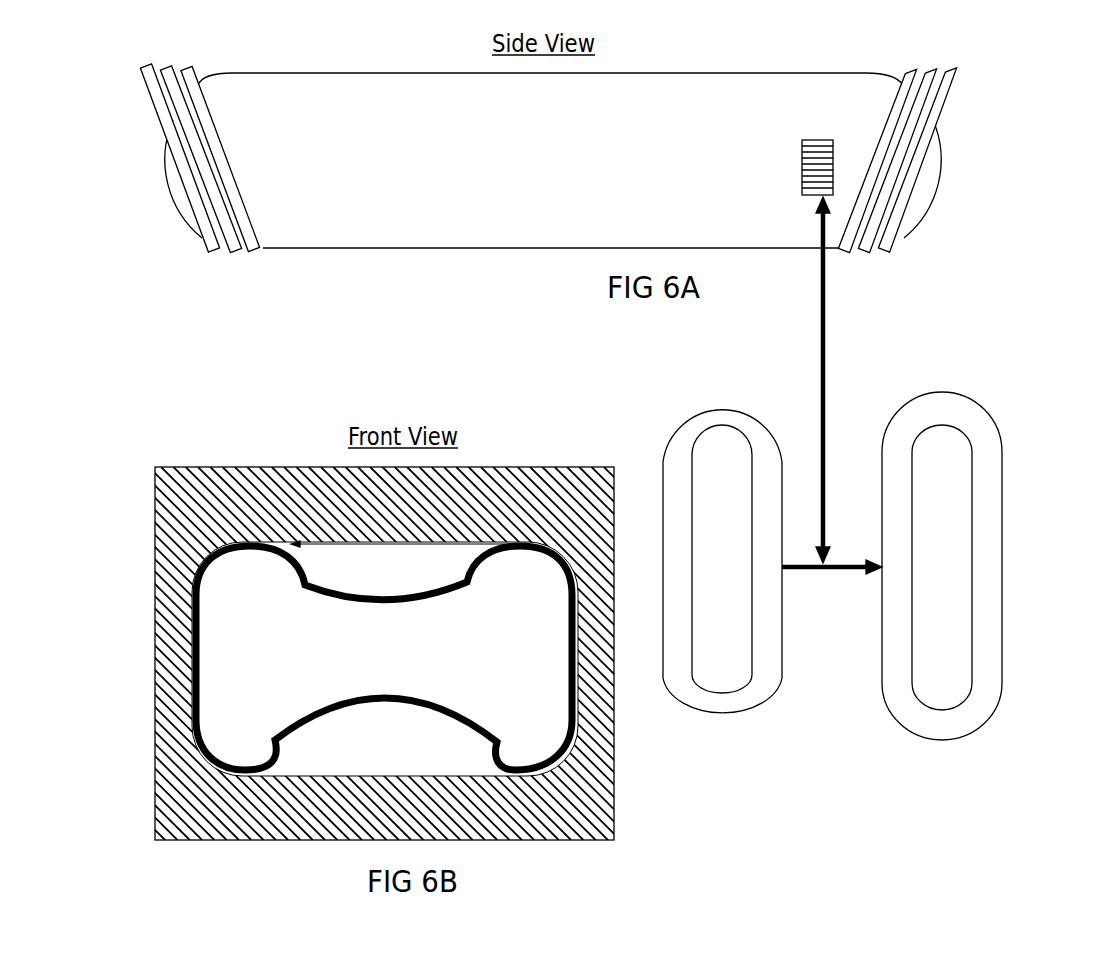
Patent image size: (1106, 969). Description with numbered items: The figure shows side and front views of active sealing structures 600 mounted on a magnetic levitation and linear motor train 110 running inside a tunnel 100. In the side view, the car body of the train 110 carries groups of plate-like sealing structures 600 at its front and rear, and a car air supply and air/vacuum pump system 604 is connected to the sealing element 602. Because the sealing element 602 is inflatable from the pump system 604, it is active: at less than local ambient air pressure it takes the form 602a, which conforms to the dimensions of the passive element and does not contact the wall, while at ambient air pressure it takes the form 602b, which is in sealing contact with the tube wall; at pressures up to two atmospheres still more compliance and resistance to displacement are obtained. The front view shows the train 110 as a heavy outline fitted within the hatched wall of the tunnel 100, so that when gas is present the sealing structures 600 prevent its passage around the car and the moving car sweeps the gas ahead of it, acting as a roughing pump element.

In FIG. 6B, the tunnel 100 is at (148, 796).
In FIG. 6A, the magnetic levitation and linear motor train 110 is at (608, 264).
In FIG. 6B, the magnetic levitation and linear motor train 110 is at (552, 622).
In FIG. 6A, the active sealing structures 600 is at (265, 257).
In FIG. 6B, the active sealing structures 600 is at (263, 503).
In FIG. 6A, the sealing element 602 is at (771, 399).
In FIG. 6A, the sealing element at below-ambient pressure 602a is at (731, 675).
In FIG. 6A, the sealing element at ambient pressure 602b is at (943, 695).
In FIG. 6A, the car air supply and air/vacuum pump system 604 is at (797, 120).